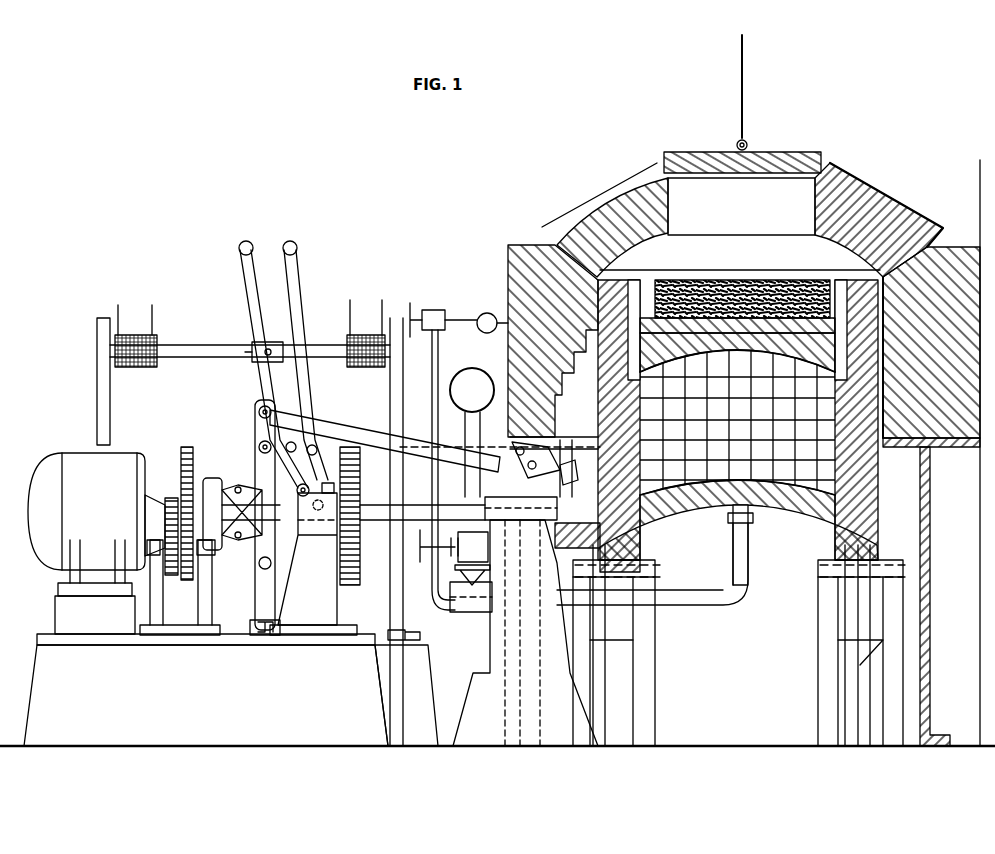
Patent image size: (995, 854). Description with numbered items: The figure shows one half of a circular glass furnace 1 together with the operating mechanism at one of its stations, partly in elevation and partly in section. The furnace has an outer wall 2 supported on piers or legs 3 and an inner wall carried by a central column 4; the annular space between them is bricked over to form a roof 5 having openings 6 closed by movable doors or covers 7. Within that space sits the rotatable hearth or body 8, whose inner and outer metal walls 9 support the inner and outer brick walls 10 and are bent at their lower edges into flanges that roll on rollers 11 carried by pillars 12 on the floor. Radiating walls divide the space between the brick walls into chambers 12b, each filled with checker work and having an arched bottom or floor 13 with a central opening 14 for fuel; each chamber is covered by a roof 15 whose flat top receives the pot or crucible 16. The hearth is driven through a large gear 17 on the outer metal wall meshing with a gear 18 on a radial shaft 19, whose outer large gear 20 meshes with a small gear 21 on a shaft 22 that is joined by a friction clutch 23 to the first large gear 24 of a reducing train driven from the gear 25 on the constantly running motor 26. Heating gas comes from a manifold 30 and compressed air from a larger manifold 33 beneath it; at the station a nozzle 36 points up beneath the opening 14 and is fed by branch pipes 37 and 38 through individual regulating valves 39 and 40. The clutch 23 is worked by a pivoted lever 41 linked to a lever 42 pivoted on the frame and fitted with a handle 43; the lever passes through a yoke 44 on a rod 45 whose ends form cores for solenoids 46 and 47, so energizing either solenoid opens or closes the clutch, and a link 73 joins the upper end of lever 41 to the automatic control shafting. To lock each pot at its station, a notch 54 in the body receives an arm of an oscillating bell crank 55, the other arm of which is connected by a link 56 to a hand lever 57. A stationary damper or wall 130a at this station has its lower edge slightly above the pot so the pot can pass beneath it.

The furnace 1 is at (520, 244).
The outer wall 2 is at (520, 350).
The piers or legs 3 is at (508, 304).
The central column 4 is at (930, 528).
The roof 5 is at (607, 212).
The openings 6 is at (822, 192).
The movable doors or covers 7 is at (797, 160).
The rotatable hearth or body 8 is at (737, 387).
The inner and outer metal walls 9 is at (870, 408).
The inner and outer brick walls 10 is at (842, 470).
The rollers 11 is at (622, 552).
The pillars 12 is at (640, 660).
The chambers 12b is at (696, 512).
The arched bottoms or floors 13 is at (795, 510).
The central openings 14 is at (748, 505).
The roof 15 is at (777, 340).
The pot or crucible 16 is at (655, 290).
The large gear 17 is at (575, 482).
The gear 18 is at (570, 540).
The radial shaft 19 is at (450, 518).
The large gear 20 is at (356, 492).
The small gear 21 is at (350, 532).
The shaft 22 is at (243, 488).
The friction clutch 23 is at (212, 478).
The first large gear 24 is at (187, 447).
The gear 25 is at (172, 498).
The motor 26 is at (125, 455).
The manifold 30 is at (486, 312).
The manifold 33 is at (472, 390).
The nozzle 36 is at (750, 573).
The branch pipe 37 is at (432, 357).
The branch pipe 38 is at (468, 420).
The regulating valve 39 is at (432, 312).
The regulating valve 40 is at (456, 571).
The pivoted lever 41 is at (248, 420).
The lever 42 is at (252, 372).
The handle 43 is at (240, 262).
The yoke 44 is at (252, 342).
The rod 45 is at (183, 345).
The solenoid 46 is at (134, 335).
The solenoid 47 is at (364, 336).
The notch 54 is at (575, 462).
The oscillating bell crank 55 is at (566, 440).
The link 56 is at (538, 478).
The hand lever 57 is at (308, 404).
The link 73 is at (368, 432).
The stationary dampers or walls 130a is at (878, 230).